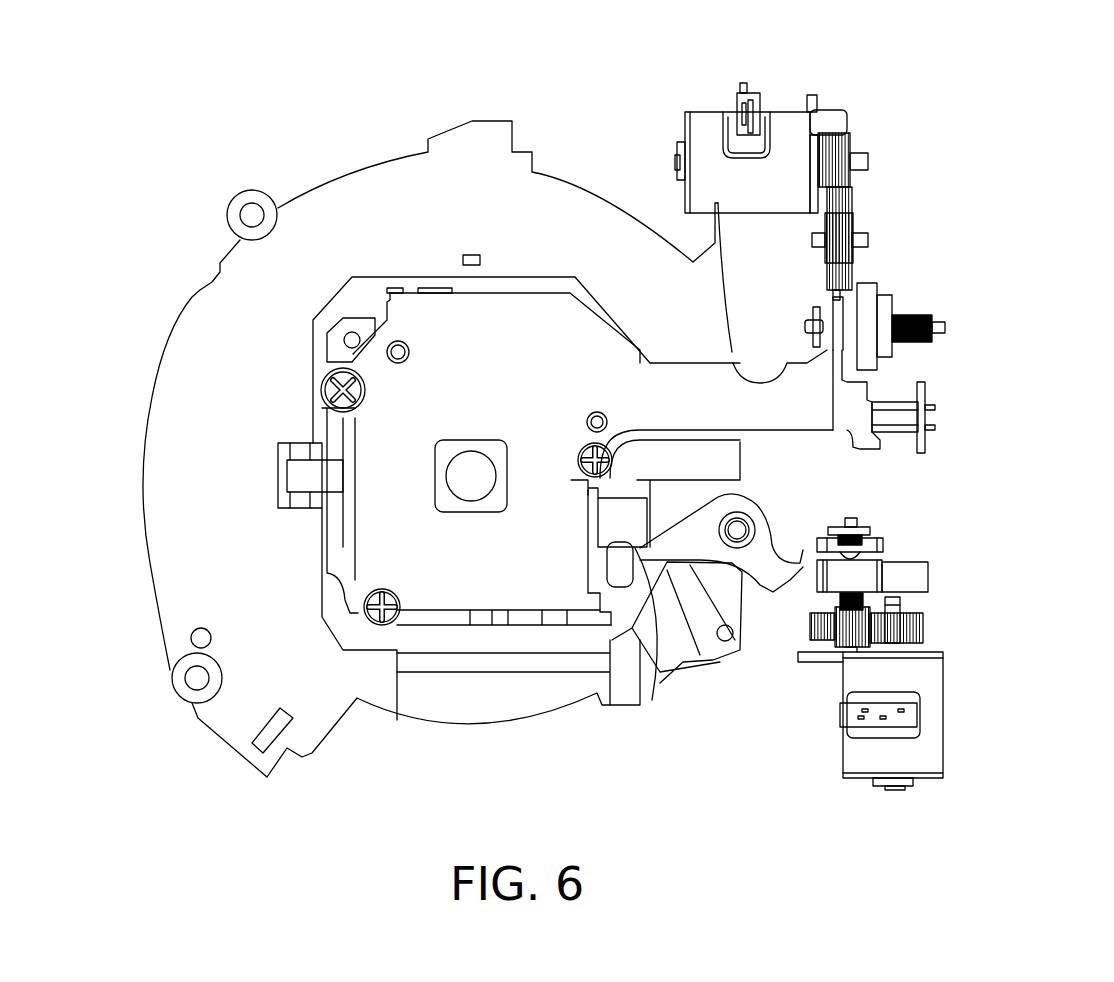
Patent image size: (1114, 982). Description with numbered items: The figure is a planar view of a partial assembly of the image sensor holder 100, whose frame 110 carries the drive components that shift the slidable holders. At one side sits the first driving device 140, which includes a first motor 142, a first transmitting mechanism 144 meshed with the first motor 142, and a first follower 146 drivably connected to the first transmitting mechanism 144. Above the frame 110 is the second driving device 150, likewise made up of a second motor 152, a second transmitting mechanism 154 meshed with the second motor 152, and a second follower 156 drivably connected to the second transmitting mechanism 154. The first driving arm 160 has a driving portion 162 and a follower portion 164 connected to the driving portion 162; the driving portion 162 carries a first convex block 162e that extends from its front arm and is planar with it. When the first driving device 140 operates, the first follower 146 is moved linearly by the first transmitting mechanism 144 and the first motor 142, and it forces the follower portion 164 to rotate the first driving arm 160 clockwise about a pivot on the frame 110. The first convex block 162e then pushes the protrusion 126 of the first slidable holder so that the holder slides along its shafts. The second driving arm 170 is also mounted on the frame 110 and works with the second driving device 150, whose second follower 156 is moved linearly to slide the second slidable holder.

The image sensor holder 100 is at (388, 68).
The frame 110 is at (345, 198).
The protrusion 126 is at (633, 520).
The first driving device 140 is at (797, 813).
The first motor 142 is at (860, 670).
The first transmitting mechanism 144 is at (827, 623).
The first follower 146 is at (817, 550).
The second driving device 150 is at (1030, 85).
The second motor 152 is at (787, 132).
The second transmitting mechanism 154 is at (842, 202).
The second follower 156 is at (883, 305).
The first driving arm 160 is at (770, 567).
The driving portion 162 is at (757, 513).
The first convex block 162e is at (663, 703).
The follower portion 164 is at (915, 580).
The second driving arm 170 is at (805, 402).